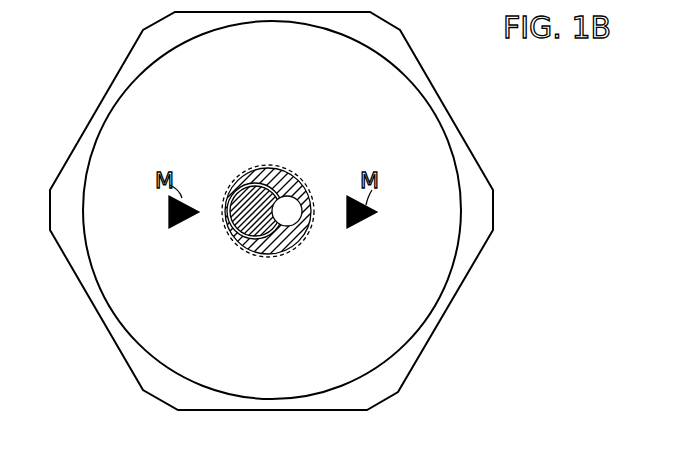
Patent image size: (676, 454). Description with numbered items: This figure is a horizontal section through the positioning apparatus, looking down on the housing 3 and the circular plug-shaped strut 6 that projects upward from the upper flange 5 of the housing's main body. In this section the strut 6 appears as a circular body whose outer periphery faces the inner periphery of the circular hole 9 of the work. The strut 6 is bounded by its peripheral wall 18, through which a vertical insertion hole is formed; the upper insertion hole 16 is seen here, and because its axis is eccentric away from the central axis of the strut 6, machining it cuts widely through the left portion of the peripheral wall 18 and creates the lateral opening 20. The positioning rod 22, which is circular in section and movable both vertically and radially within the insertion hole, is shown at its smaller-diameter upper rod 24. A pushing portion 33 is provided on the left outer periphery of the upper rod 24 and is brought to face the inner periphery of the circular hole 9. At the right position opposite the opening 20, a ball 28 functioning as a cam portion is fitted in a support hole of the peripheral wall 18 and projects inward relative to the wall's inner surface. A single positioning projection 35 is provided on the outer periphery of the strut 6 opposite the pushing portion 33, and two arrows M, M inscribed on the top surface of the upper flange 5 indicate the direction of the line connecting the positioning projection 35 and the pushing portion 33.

The housing 3 is at (492, 177).
The upper flange 5 is at (466, 146).
The strut 6 is at (288, 172).
The circular hole 9 is at (272, 166).
The upper insertion hole 16 is at (255, 187).
The peripheral wall 18 is at (292, 242).
The opening 20 is at (251, 184).
The positioning rod 22 is at (212, 306).
The upper rod 24 is at (233, 235).
The ball 28 is at (299, 202).
The pushing portion 33 is at (233, 226).
The positioning projection 35 is at (304, 220).